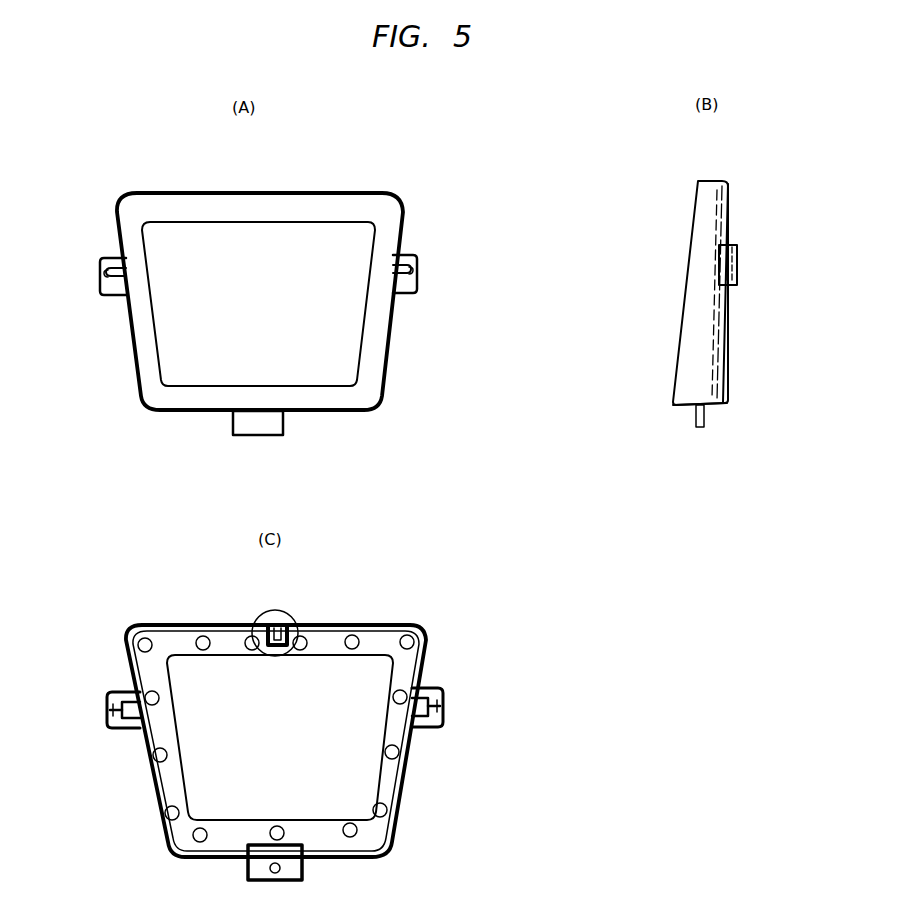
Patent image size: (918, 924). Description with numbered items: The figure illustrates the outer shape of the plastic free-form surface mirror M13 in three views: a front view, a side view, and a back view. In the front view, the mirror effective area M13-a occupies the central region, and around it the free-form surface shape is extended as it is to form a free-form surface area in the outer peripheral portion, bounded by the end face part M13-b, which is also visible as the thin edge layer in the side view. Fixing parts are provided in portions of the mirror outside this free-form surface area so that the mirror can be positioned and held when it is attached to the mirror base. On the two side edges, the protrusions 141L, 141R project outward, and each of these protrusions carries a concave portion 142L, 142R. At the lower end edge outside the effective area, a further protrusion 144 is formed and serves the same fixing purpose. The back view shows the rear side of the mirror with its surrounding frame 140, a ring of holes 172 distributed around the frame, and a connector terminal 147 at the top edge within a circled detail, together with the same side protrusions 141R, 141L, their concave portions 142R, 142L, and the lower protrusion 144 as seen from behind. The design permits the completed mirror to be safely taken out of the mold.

The mirror effective area M13-a is at (413, 276).
The end face part M13-b is at (468, 276).
The free-form surface mirror M13 is at (679, 414).
The protrusion 141L is at (276, 466).
The protrusion 141R is at (430, 464).
The concave portion 142L is at (281, 507).
The concave portion 142R is at (439, 511).
The protrusion 144 is at (486, 648).
The frame 140 is at (281, 716).
The screw holes 172 is at (311, 721).
The connector terminal 147 is at (301, 616).